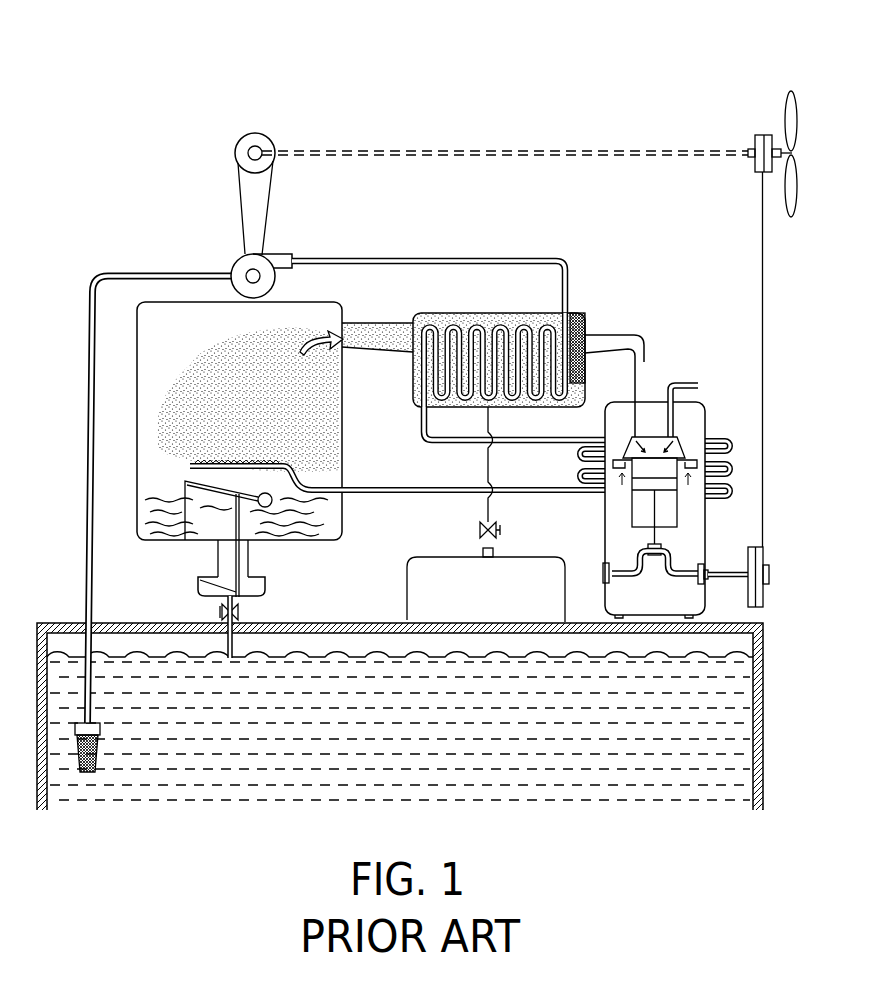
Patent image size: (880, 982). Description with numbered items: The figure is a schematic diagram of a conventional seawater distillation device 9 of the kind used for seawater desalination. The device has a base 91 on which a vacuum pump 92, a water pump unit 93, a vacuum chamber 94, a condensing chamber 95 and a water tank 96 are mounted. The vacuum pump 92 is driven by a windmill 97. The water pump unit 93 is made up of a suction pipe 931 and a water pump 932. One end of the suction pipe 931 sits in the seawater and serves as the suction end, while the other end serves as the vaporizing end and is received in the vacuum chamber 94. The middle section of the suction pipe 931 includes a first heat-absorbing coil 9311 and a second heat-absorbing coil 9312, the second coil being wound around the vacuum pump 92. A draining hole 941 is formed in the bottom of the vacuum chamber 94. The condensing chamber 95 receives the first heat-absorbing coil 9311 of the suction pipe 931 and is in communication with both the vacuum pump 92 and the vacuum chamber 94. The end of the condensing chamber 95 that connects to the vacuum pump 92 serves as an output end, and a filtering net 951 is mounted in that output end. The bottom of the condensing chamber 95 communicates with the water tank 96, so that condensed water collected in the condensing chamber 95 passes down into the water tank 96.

The seawater distillation device 9 is at (100, 234).
The base 91 is at (340, 629).
The vacuum pump 92 is at (703, 465).
The water pump unit 93 is at (444, 215).
The suction pipe 931 is at (416, 262).
The first heat-absorbing coil 9311 is at (503, 324).
The second heat-absorbing coil 9312 is at (718, 442).
The water pump 932 is at (236, 263).
The vacuum chamber 94 is at (330, 476).
The draining hole 941 is at (226, 566).
The condensing chamber 95 is at (524, 306).
The filtering net 951 is at (578, 313).
The water tank 96 is at (458, 566).
The windmill 97 is at (790, 91).